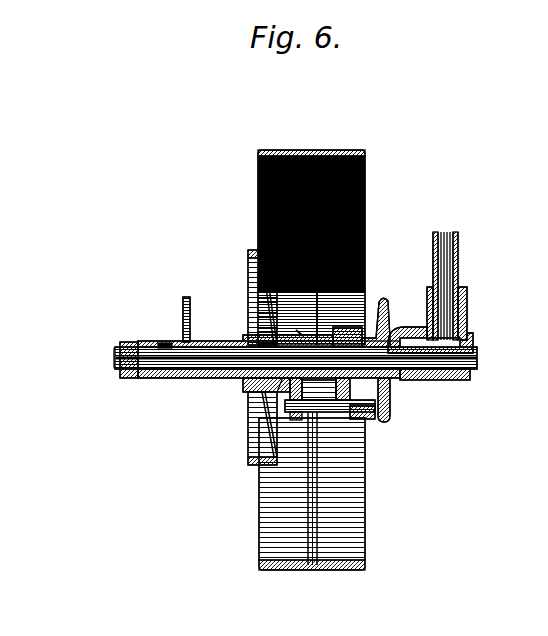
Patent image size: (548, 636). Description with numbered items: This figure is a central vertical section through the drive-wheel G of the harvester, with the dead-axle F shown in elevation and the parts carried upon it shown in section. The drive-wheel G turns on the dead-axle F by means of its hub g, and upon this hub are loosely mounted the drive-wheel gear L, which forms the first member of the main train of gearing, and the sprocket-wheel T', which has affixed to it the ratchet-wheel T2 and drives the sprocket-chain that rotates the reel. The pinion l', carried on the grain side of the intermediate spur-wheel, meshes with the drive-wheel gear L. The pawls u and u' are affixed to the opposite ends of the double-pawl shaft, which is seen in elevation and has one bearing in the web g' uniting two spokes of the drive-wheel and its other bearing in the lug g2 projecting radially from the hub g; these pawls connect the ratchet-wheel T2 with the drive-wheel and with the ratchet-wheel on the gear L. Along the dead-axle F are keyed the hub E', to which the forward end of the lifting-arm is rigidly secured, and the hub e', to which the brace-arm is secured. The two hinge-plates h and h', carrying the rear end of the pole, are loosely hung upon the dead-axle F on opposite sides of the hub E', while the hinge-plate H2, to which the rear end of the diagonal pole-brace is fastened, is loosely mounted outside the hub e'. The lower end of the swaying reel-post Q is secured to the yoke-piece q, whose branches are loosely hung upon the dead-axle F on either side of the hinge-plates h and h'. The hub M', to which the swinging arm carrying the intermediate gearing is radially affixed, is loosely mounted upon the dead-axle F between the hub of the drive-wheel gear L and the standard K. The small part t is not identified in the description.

The drive-wheel G is at (311, 235).
The drive-wheel gear L is at (254, 361).
The dead-axle F is at (477, 359).
The hub M' is at (269, 352).
The hinge-plate H2 is at (131, 351).
The hub e' is at (167, 336).
The standard K is at (192, 319).
The lug t is at (295, 327).
The hub g is at (347, 332).
The sprocket-wheel T' is at (383, 322).
The ratchet-wheel T2 is at (378, 306).
The yoke-piece q is at (430, 344).
The reel-post Q is at (449, 286).
The web g' is at (288, 424).
The pinion l' is at (253, 407).
The plate v is at (327, 412).
The pawl u' is at (301, 488).
The pawl u is at (382, 412).
The lug g2 is at (368, 418).
The hinge-plate h is at (400, 398).
The hinge-plate h' is at (466, 392).
The hub E' is at (442, 411).